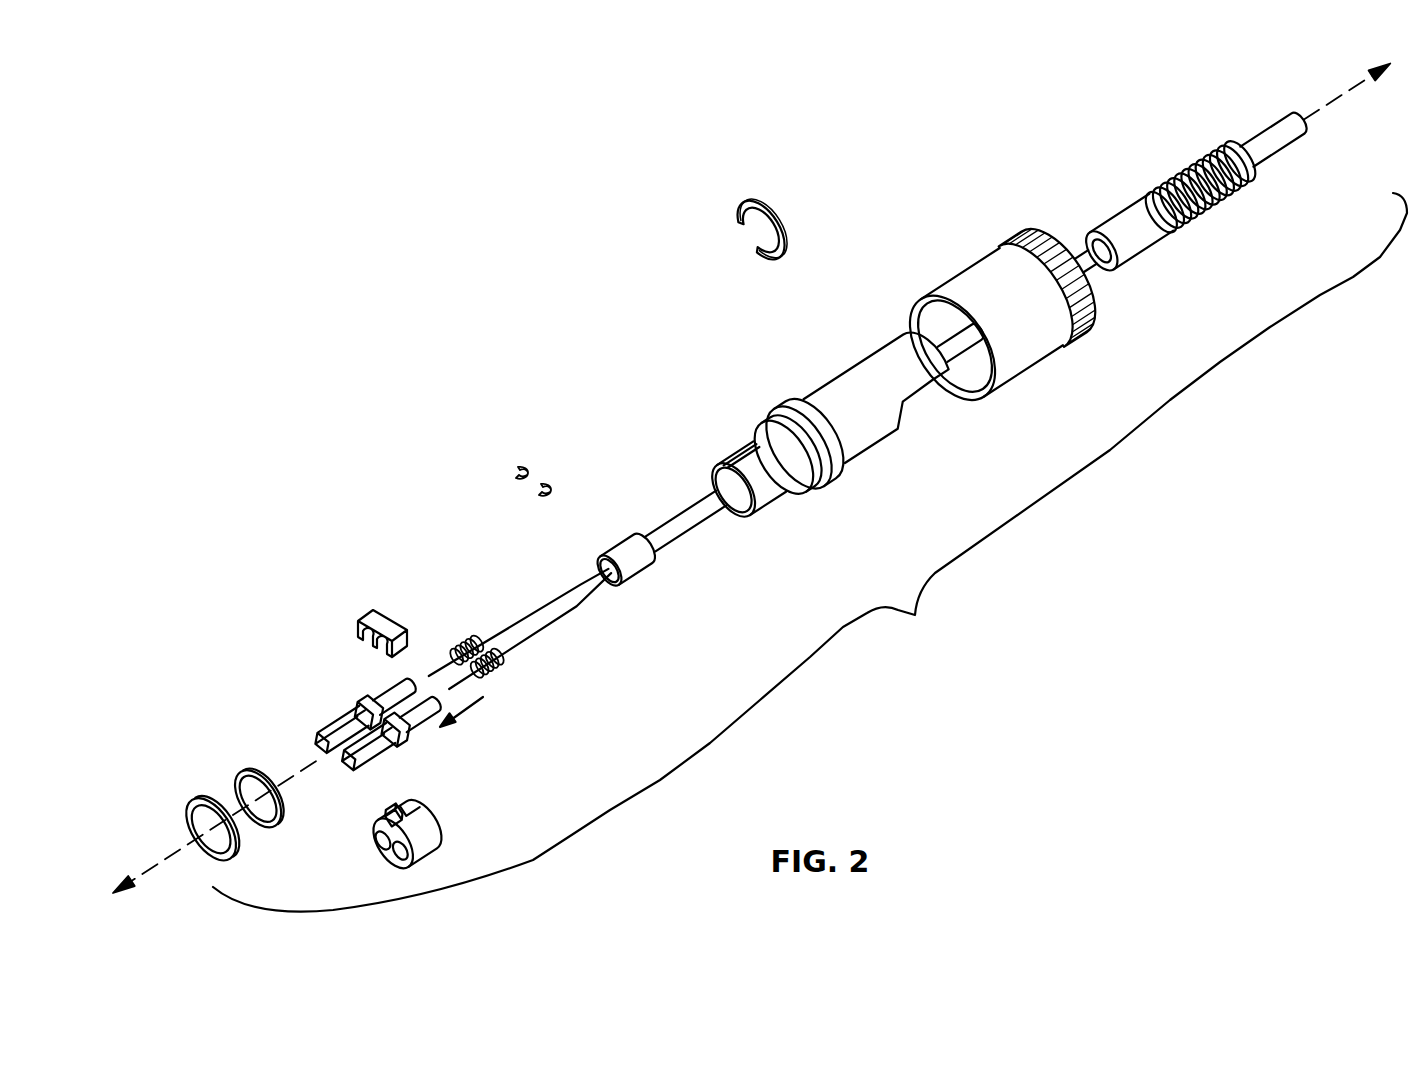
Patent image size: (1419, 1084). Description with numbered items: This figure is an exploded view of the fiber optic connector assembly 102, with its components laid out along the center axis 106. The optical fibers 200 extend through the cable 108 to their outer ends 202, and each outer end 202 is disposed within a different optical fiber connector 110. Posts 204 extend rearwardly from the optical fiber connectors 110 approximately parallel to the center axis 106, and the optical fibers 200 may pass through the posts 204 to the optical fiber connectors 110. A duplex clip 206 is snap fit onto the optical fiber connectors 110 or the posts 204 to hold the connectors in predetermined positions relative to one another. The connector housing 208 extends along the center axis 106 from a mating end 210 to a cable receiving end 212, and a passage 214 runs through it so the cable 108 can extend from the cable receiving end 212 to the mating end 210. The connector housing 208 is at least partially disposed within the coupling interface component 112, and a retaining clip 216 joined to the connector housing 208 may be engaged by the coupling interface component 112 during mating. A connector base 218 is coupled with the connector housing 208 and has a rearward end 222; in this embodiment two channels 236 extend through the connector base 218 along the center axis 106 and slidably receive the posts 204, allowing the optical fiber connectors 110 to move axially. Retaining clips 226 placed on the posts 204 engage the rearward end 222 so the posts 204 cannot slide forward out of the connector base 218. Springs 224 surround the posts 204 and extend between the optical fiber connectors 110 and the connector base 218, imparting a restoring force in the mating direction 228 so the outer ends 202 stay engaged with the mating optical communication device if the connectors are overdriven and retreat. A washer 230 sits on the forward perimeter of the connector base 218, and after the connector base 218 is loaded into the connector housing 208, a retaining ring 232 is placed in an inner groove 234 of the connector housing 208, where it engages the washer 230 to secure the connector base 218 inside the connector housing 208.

The fiber optic connector assembly 102 is at (810, 552).
The center axis 106 is at (1313, 118).
The cable 108 is at (1270, 148).
The optical fiber connector 110 is at (368, 760).
The coupling interface component 112 is at (977, 260).
The optical fibers 200 is at (533, 637).
The outer ends 202 is at (430, 677).
The posts 204 is at (393, 687).
The duplex clip 206 is at (365, 612).
The connector housing 208 is at (733, 443).
The mating end 210 is at (726, 518).
The cable receiving end 212 is at (905, 343).
The passage 214 is at (715, 475).
The retaining clip 216 is at (742, 205).
The connector base 218 is at (423, 845).
The rearward end 222 is at (423, 820).
The springs 224 is at (493, 677).
The retaining clips 226 is at (513, 467).
The mating direction 228 is at (477, 712).
The washer 230 is at (243, 773).
The retaining ring 232 is at (193, 803).
The inner groove 234 is at (955, 383).
The channels 236 is at (367, 847).